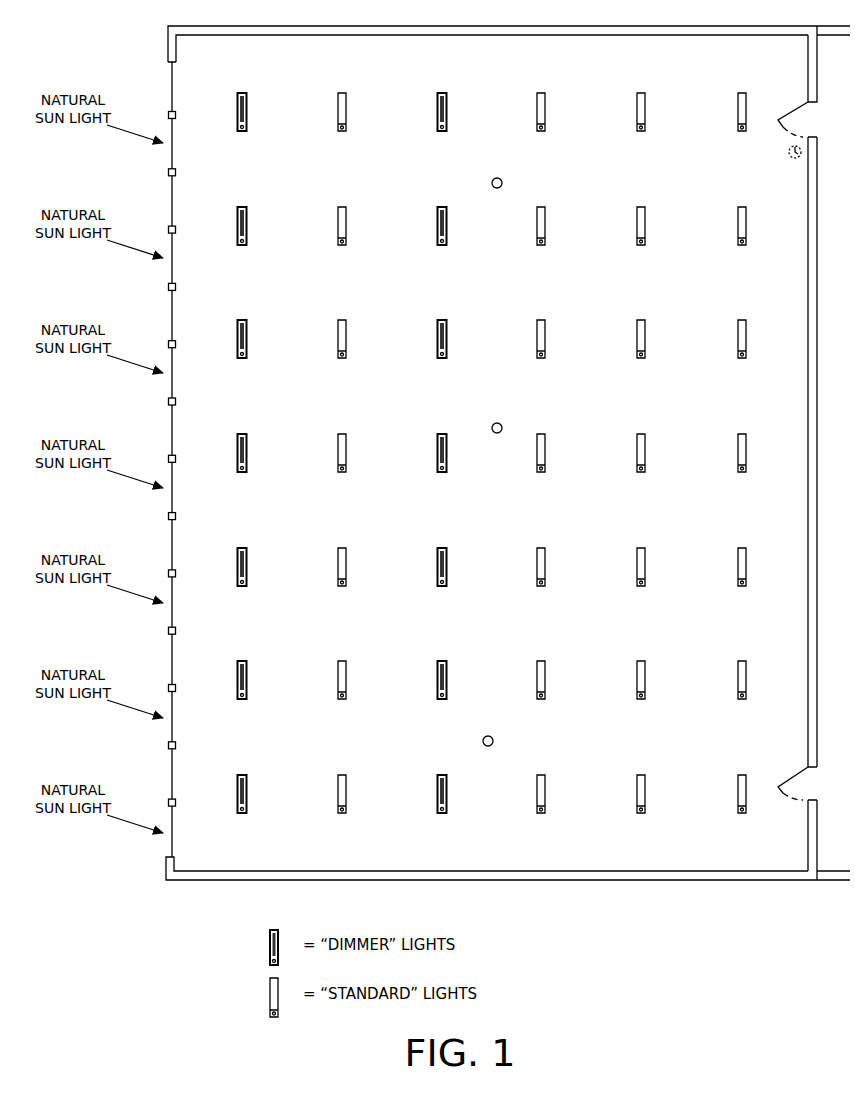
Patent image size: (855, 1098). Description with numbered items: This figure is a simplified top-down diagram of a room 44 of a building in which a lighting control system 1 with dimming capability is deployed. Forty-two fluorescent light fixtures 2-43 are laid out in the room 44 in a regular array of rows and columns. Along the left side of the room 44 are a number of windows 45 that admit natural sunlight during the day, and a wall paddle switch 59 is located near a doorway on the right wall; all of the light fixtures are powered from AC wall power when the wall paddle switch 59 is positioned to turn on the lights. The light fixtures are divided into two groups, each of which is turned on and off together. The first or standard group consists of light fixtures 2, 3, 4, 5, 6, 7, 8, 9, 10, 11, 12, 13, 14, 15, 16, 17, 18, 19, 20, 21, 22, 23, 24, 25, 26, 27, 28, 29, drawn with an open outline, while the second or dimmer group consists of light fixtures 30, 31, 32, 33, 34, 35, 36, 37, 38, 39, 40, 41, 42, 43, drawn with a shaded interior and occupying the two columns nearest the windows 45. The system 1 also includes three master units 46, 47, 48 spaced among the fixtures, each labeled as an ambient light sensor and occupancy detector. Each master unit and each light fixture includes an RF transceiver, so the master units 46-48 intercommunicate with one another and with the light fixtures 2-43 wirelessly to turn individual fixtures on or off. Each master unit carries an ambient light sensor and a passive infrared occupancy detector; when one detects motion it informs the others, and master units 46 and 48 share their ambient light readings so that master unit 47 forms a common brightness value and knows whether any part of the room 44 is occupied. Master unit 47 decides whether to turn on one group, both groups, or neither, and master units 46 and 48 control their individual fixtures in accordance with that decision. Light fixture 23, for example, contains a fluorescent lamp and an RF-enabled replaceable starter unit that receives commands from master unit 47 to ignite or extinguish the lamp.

The lighting control system 1 is at (363, 100).
The fluorescent light fixture 2 is at (342, 122).
The fluorescent light fixture 3 is at (342, 236).
The fluorescent light fixture 4 is at (342, 349).
The fluorescent light fixture 5 is at (342, 463).
The fluorescent light fixture 6 is at (342, 577).
The fluorescent light fixture 7 is at (342, 690).
The fluorescent light fixture 8 is at (342, 804).
The fluorescent light fixture 9 is at (541, 122).
The fluorescent light fixture 10 is at (541, 236).
The fluorescent light fixture 11 is at (541, 349).
The fluorescent light fixture 12 is at (541, 463).
The fluorescent light fixture 13 is at (541, 577).
The fluorescent light fixture 14 is at (541, 690).
The fluorescent light fixture 15 is at (541, 804).
The fluorescent light fixture 16 is at (641, 122).
The fluorescent light fixture 17 is at (641, 236).
The fluorescent light fixture 18 is at (641, 349).
The fluorescent light fixture 19 is at (641, 463).
The fluorescent light fixture 20 is at (641, 577).
The fluorescent light fixture 21 is at (641, 690).
The fluorescent light fixture 22 is at (641, 804).
The fluorescent light fixture 23 is at (742, 122).
The fluorescent light fixture 24 is at (742, 236).
The fluorescent light fixture 25 is at (742, 349).
The fluorescent light fixture 26 is at (742, 463).
The fluorescent light fixture 27 is at (742, 577).
The fluorescent light fixture 28 is at (742, 690).
The fluorescent light fixture 29 is at (742, 804).
The fluorescent light fixture 30 is at (242, 122).
The fluorescent light fixture 31 is at (242, 236).
The fluorescent light fixture 32 is at (242, 349).
The fluorescent light fixture 33 is at (242, 463).
The fluorescent light fixture 34 is at (242, 577).
The fluorescent light fixture 35 is at (242, 690).
The fluorescent light fixture 36 is at (242, 804).
The fluorescent light fixture 37 is at (442, 122).
The fluorescent light fixture 38 is at (442, 236).
The fluorescent light fixture 39 is at (442, 349).
The fluorescent light fixture 40 is at (442, 463).
The fluorescent light fixture 41 is at (442, 577).
The fluorescent light fixture 42 is at (442, 690).
The fluorescent light fixture 43 is at (442, 804).
The room 44 is at (226, 69).
The windows 45 is at (172, 83).
The master unit 46 is at (497, 188).
The master unit 47 is at (497, 433).
The master unit 48 is at (488, 746).
The wall paddle switch 59 is at (789, 153).